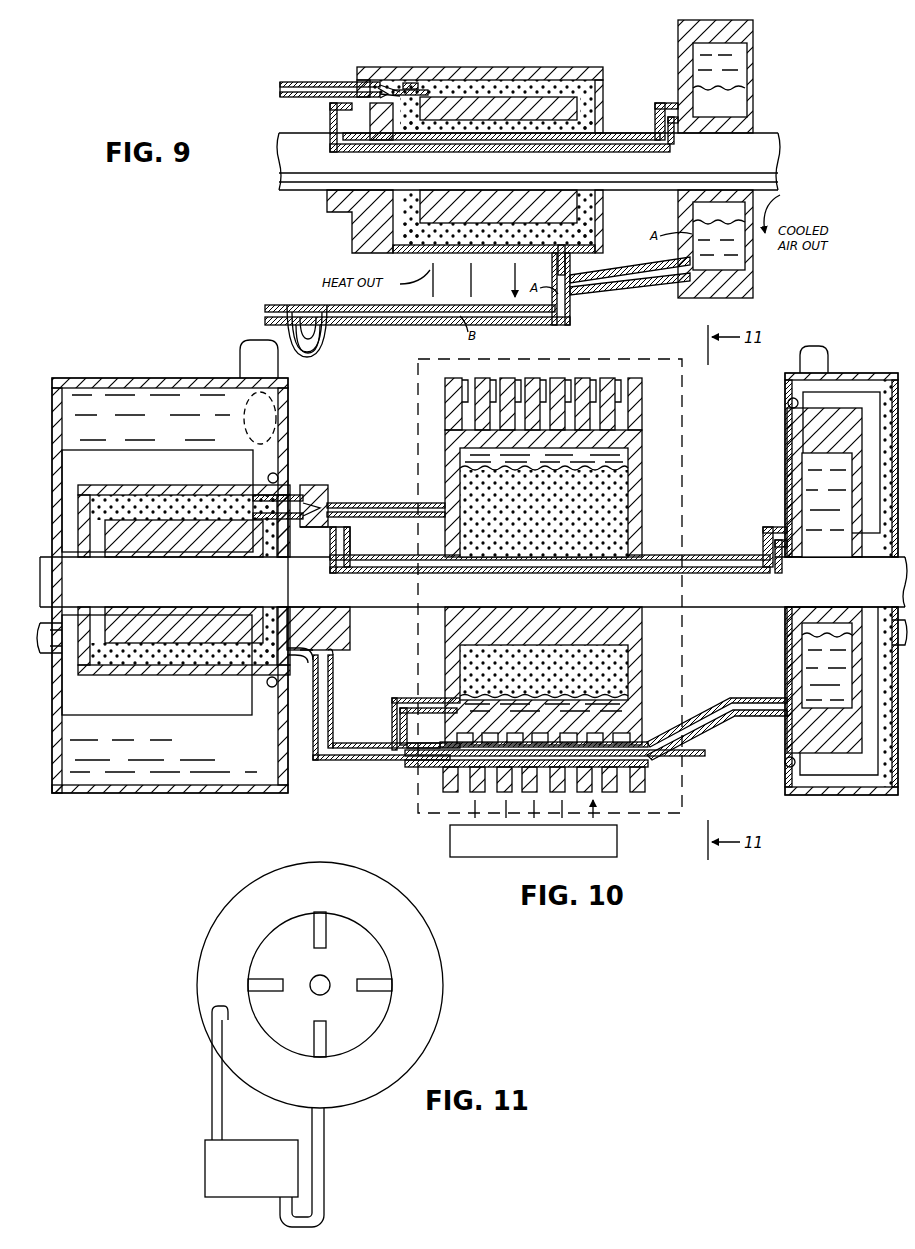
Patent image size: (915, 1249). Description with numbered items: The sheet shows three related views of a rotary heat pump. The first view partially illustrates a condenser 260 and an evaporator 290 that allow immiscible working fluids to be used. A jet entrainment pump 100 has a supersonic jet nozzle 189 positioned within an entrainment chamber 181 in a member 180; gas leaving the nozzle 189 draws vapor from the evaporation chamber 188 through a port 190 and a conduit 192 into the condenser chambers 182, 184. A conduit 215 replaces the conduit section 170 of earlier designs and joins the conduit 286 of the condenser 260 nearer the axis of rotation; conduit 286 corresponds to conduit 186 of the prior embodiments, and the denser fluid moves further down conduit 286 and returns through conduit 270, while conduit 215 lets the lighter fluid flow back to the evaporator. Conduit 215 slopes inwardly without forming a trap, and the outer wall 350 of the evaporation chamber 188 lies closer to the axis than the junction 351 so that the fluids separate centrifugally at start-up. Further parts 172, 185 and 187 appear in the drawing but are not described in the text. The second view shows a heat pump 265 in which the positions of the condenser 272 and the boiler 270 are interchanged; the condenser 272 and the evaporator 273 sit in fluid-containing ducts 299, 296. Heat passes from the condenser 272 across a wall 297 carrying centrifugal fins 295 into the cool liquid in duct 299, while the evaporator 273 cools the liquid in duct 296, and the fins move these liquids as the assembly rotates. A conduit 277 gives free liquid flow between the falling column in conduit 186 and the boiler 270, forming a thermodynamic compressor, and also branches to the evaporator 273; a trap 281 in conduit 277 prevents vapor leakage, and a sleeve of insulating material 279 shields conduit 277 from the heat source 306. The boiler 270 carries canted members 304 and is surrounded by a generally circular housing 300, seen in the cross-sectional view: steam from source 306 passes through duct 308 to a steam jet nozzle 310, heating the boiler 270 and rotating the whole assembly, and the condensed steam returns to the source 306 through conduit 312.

In FIG. 9, the jet entrainment pump 100 is at (374, 68).
In FIG. 10, the jet entrainment pump 100 is at (299, 475).
In FIG. 9, the conduit section 170 is at (358, 325).
In FIG. 9, the expansion bend 172 is at (319, 348).
In FIG. 9, the member 180 is at (357, 76).
In FIG. 10, the member 180 is at (325, 484).
In FIG. 9, the entrainment chamber 181 is at (344, 114).
In FIG. 9, the condenser chamber 182 is at (562, 73).
In FIG. 9, the condenser chamber 184 is at (601, 104).
In FIG. 9, the seal plate 185 is at (407, 82).
In FIG. 9, the conduit 186 is at (387, 88).
In FIG. 10, the conduit 186 is at (300, 492).
In FIG. 9, the core 187 is at (431, 104).
In FIG. 10, the core 187 is at (253, 530).
In FIG. 9, the evaporation chamber 188 is at (744, 88).
In FIG. 9, the supersonic jet nozzle 189 is at (382, 86).
In FIG. 10, the supersonic jet nozzle 189 is at (320, 500).
In FIG. 9, the port 190 is at (426, 94).
In FIG. 10, the port 190 is at (253, 498).
In FIG. 9, the conduit 192 is at (608, 128).
In FIG. 9, the conduit 215 is at (626, 284).
In FIG. 9, the condenser 260 is at (491, 84).
In FIG. 10, the heat pump 265 is at (212, 354).
In FIG. 10, the boiler 270 is at (644, 680).
In FIG. 10, the condenser 272 is at (350, 670).
In FIG. 10, the evaporator 273 is at (780, 728).
In FIG. 10, the conduit 277 is at (423, 766).
In FIG. 10, the sleeve of thermal insulating material 279 is at (654, 756).
In FIG. 10, the trap 281 is at (360, 746).
In FIG. 9, the conduit 286 is at (570, 304).
In FIG. 9, the evaporator 290 is at (748, 155).
In FIG. 10, the centrifugal fins 295 is at (245, 735).
In FIG. 10, the duct 296 is at (888, 794).
In FIG. 10, the wall 297 is at (184, 594).
In FIG. 10, the duct 299 is at (286, 792).
In FIG. 10, the housing 300 is at (682, 630).
In FIG. 11, the housing 300 is at (398, 896).
In FIG. 10, the canted members 304 is at (646, 790).
In FIG. 11, the canted members 304 is at (372, 990).
In FIG. 10, the heat source 306 is at (450, 832).
In FIG. 11, the heat source 306 is at (204, 1163).
In FIG. 11, the duct 308 is at (210, 1096).
In FIG. 11, the steam jet nozzle 310 is at (218, 1006).
In FIG. 11, the conduit 312 is at (324, 1130).
In FIG. 9, the outer wall 350 is at (718, 272).
In FIG. 9, the junction 351 is at (573, 272).